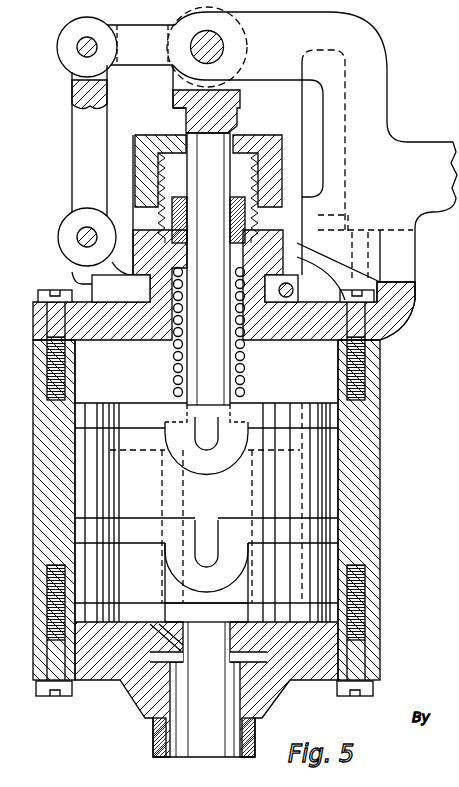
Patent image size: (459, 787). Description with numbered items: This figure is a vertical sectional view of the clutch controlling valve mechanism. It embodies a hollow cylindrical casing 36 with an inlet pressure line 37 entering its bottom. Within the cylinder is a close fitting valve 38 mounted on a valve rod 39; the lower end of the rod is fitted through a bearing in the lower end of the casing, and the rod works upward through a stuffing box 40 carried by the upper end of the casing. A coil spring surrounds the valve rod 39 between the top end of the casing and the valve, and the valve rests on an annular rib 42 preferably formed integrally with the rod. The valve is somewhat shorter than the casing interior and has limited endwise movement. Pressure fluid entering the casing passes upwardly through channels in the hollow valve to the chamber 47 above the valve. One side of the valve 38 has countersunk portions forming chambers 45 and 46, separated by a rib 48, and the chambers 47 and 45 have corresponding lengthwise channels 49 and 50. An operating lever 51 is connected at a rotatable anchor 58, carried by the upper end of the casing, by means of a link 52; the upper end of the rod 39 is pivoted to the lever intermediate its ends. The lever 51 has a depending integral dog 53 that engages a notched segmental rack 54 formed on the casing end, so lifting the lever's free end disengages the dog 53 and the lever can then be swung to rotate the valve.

The hollow cylindrical casing 36 is at (376, 421).
The inlet pressure line 37 is at (153, 745).
The valve 38 is at (89, 410).
The valve rod 39 is at (233, 130).
The stuffing box 40 is at (168, 183).
The annular rib 42 is at (167, 613).
The chamber 45 is at (329, 470).
The chamber 46 is at (327, 560).
The chamber 47 is at (331, 365).
The rib 48 is at (337, 520).
The lengthwise channel 49 is at (251, 428).
The lengthwise channel 50 is at (207, 524).
The operating lever 51 is at (420, 148).
The link 52 is at (78, 152).
The dog 53 is at (410, 254).
The notched segmental rack 54 is at (420, 290).
The rotatable anchor 58 is at (169, 281).